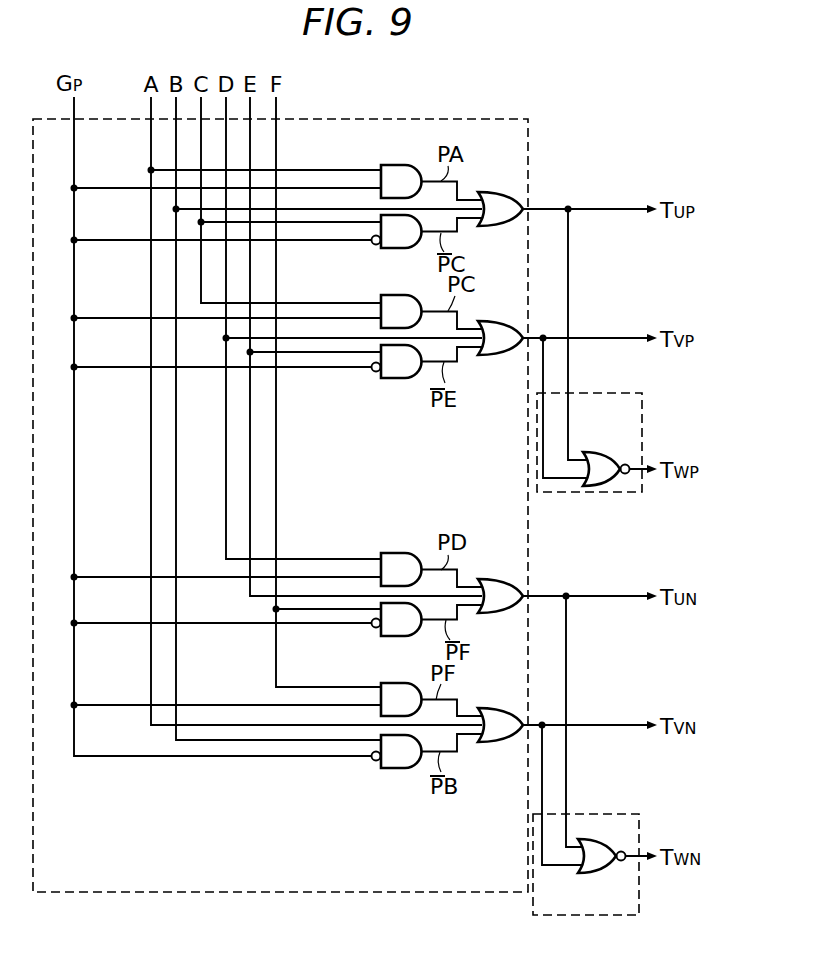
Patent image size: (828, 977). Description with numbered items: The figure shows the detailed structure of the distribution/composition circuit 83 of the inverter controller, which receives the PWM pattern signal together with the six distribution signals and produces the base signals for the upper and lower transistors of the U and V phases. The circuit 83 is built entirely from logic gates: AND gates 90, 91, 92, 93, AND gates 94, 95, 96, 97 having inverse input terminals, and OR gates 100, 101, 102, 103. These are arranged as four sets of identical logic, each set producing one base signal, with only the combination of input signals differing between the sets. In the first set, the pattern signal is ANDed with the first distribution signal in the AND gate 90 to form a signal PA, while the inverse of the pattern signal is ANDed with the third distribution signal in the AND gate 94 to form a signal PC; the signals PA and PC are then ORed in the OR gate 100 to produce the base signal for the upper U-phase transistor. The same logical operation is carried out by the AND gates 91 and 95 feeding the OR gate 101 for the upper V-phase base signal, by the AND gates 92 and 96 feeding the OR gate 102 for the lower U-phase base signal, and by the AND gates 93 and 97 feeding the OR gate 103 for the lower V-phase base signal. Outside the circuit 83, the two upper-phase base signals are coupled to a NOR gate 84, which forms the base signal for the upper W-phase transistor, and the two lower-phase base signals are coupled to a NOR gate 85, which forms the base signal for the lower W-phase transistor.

The distribution/composition circuit 83 is at (497, 118).
The NOR gate 84 is at (643, 414).
The NOR gate 85 is at (605, 814).
The AND gate 90 is at (401, 165).
The AND gate 91 is at (388, 295).
The AND gate 92 is at (402, 553).
The AND gate 93 is at (388, 683).
The AND gate having inverse input terminal 94 is at (408, 250).
The AND gate having inverse input terminal 95 is at (395, 379).
The AND gate having inverse input terminal 96 is at (406, 639).
The AND gate having inverse input terminal 97 is at (388, 769).
The OR gate 100 is at (497, 192).
The OR gate 101 is at (496, 321).
The OR gate 102 is at (497, 579).
The OR gate 103 is at (492, 708).